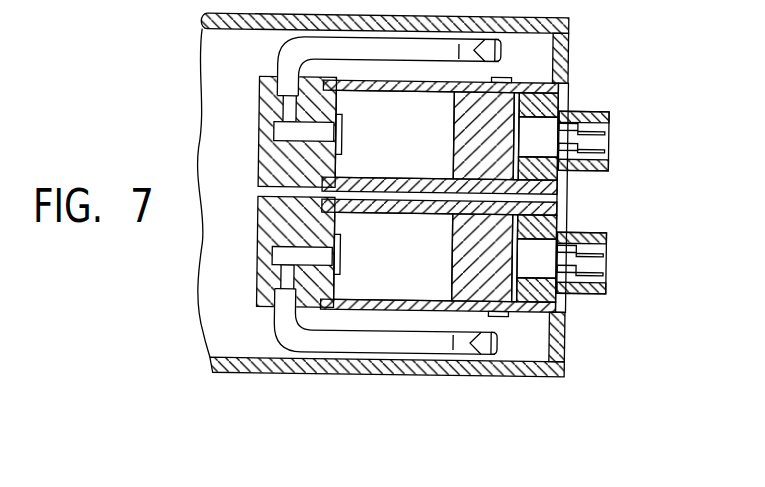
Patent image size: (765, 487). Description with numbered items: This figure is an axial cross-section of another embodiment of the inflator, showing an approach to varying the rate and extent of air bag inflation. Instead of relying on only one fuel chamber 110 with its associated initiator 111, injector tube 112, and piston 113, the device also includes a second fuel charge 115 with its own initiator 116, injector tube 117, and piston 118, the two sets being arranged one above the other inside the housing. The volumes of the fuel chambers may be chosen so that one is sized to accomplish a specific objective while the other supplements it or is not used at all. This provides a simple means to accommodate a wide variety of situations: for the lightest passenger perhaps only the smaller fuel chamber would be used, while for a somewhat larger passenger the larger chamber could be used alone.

The fuel chamber 110 is at (413, 151).
The initiator 111 is at (613, 115).
The injector tube 112 is at (497, 49).
The piston 113 is at (539, 104).
The second fuel charge 115 is at (415, 271).
The initiator 116 is at (599, 250).
The injector tube 117 is at (281, 346).
The piston 118 is at (456, 291).